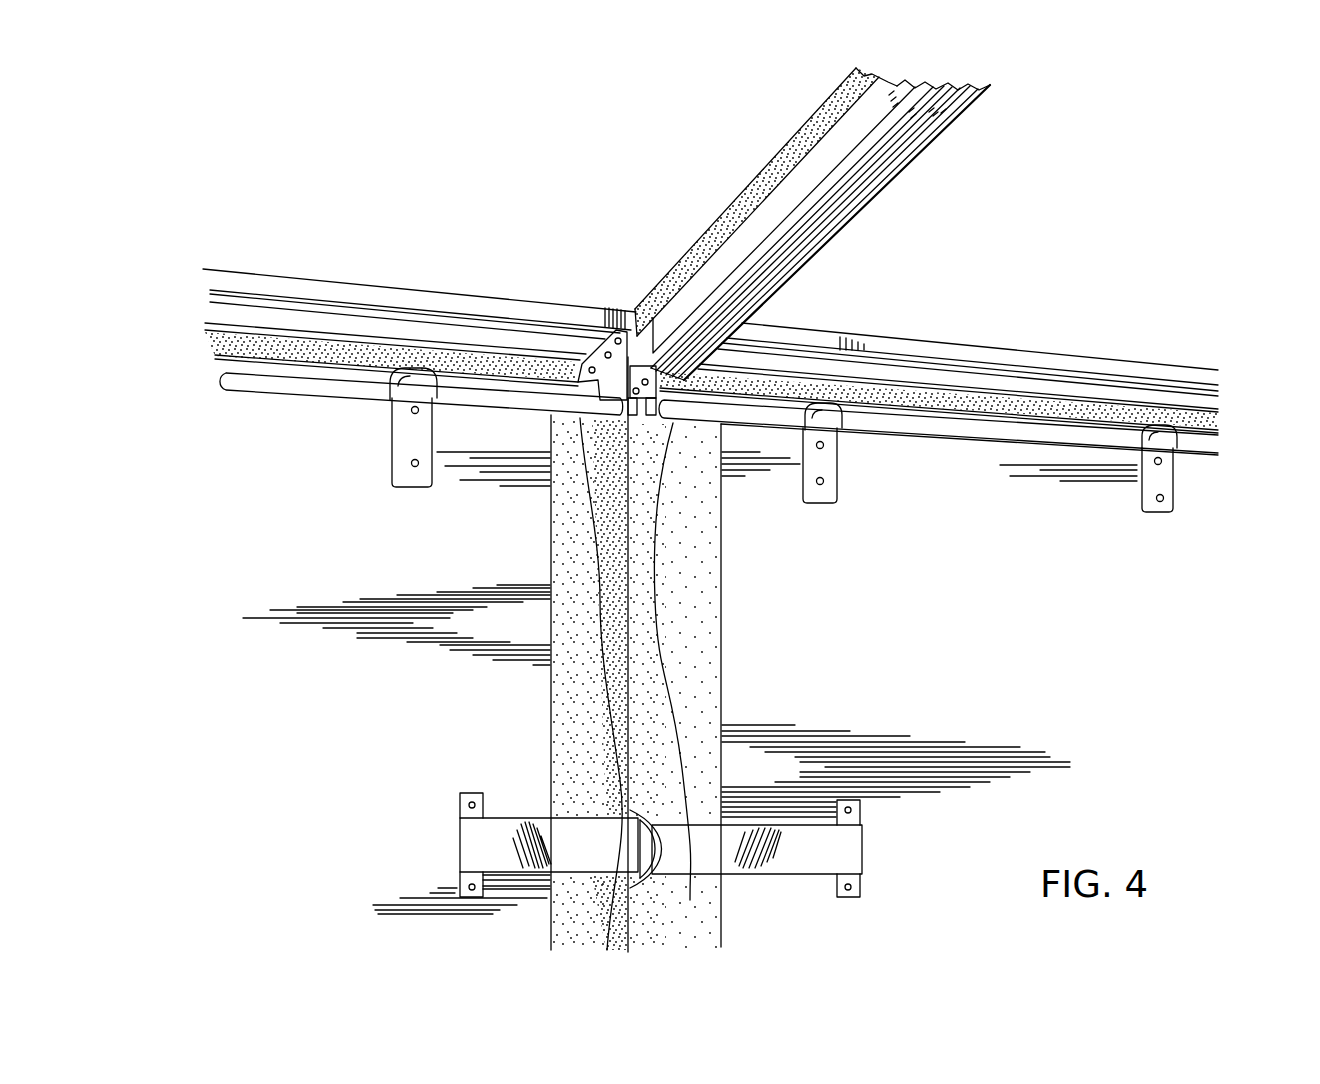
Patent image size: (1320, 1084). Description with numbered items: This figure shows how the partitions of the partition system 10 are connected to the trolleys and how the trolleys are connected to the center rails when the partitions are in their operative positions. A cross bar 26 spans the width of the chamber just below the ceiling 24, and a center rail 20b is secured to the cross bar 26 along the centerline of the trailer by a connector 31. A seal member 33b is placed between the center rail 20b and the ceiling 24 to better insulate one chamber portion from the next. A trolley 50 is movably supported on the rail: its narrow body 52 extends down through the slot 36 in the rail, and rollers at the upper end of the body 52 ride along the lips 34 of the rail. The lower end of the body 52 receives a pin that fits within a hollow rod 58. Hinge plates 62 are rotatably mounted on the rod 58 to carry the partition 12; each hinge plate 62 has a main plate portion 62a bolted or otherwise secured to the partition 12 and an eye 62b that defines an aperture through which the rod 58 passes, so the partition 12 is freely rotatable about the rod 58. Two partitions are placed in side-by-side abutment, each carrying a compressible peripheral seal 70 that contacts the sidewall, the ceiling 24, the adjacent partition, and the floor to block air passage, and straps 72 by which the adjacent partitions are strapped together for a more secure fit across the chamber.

The partition system 10 is at (254, 214).
The partition 12 is at (396, 705).
The center rail 20b is at (803, 192).
The ceiling 24 is at (540, 180).
The cross bar 26 is at (323, 293).
The connector 31 is at (610, 333).
The seal member 33b is at (733, 215).
The lip 34 is at (703, 290).
The slot 36 is at (857, 152).
The trolley 50 is at (603, 366).
The body 52 is at (612, 407).
The hollow rod 58 is at (273, 373).
The hinge plate 62 is at (380, 457).
The main plate portion 62a is at (405, 423).
The eye 62b is at (436, 396).
The peripheral seal 70 is at (250, 340).
The strap 72 is at (500, 838).